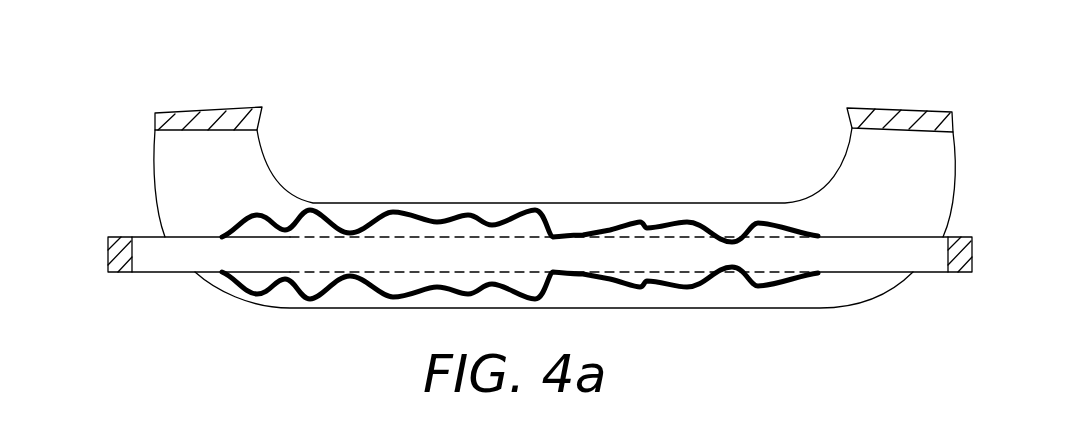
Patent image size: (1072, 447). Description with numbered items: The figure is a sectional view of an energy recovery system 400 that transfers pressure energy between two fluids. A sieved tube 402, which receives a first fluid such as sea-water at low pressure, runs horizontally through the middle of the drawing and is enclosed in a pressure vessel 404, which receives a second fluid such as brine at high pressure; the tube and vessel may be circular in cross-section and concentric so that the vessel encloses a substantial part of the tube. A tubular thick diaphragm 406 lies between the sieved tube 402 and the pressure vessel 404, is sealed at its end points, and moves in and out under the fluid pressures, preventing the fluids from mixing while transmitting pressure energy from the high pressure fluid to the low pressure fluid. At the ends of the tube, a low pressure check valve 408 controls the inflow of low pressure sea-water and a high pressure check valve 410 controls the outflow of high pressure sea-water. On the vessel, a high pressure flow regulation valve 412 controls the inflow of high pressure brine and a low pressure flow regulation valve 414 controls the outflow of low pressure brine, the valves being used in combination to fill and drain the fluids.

The energy recovery system 400 is at (732, 70).
The sieved tube 402 is at (155, 260).
The pressure vessel 404 is at (258, 183).
The tubular thick diaphragm 406 is at (535, 210).
The low pressure check valve 408 is at (108, 253).
The high pressure check valve 410 is at (972, 250).
The high pressure flow regulation valve 412 is at (208, 110).
The low pressure flow regulation valve 414 is at (897, 108).